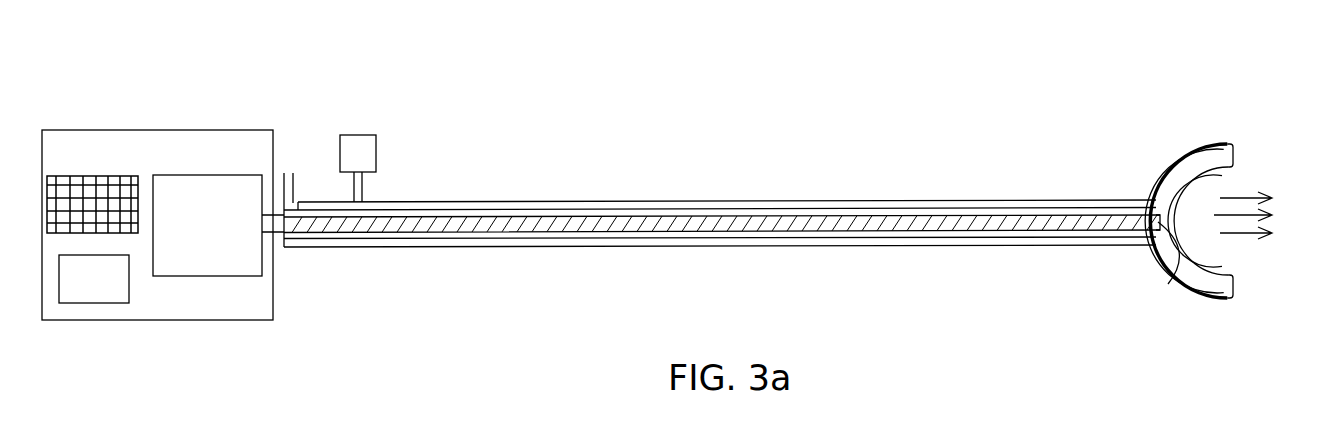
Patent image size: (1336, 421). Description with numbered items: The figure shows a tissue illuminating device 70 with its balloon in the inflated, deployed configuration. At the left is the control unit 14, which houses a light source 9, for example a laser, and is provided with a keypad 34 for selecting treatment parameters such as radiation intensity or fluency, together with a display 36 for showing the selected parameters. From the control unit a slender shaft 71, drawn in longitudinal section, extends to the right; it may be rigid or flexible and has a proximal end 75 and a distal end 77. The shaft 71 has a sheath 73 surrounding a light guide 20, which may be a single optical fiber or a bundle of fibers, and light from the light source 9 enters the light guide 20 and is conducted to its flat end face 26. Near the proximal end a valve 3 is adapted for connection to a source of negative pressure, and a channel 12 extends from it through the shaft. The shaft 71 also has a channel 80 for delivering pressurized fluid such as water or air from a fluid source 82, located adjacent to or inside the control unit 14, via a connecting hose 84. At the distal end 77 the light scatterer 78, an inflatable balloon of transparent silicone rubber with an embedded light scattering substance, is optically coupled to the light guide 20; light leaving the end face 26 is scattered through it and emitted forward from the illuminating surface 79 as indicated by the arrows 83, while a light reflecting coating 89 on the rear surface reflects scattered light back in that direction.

The tissue illuminating device 70 is at (828, 95).
The control unit 14 is at (207, 129).
The keypad 34 is at (93, 176).
The display 36 is at (98, 288).
The light source 9 is at (209, 270).
The valve 3 is at (293, 190).
The proximal end 75 is at (285, 127).
The fluid source 82 is at (357, 155).
The connecting hose 84 is at (361, 185).
The channel 12 is at (363, 250).
The shaft 71 is at (742, 188).
The channel 80 is at (473, 207).
The sheath 73 is at (873, 212).
The light guide 20 is at (680, 222).
The light scatterer 78 is at (1213, 127).
The light reflecting coating 89 is at (1180, 157).
The distal end 77 is at (1140, 187).
The end face 26 is at (1158, 222).
The illuminating surface 79 is at (1231, 276).
The arrows 83 is at (1275, 215).